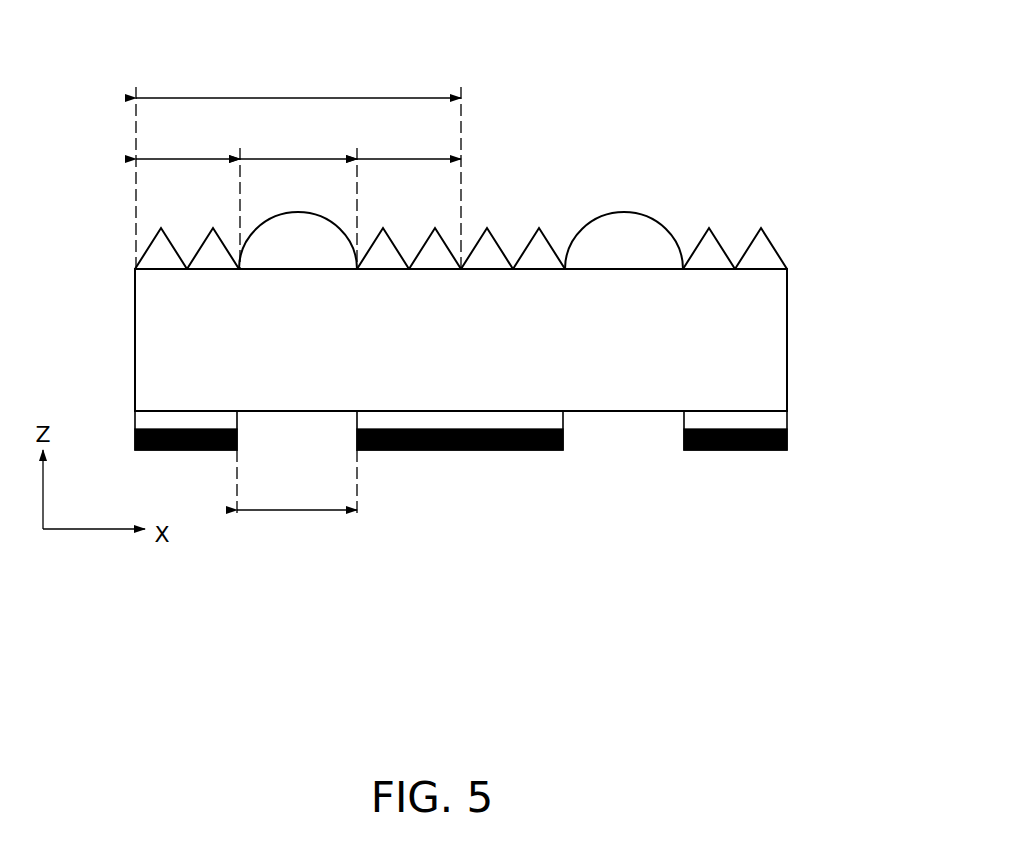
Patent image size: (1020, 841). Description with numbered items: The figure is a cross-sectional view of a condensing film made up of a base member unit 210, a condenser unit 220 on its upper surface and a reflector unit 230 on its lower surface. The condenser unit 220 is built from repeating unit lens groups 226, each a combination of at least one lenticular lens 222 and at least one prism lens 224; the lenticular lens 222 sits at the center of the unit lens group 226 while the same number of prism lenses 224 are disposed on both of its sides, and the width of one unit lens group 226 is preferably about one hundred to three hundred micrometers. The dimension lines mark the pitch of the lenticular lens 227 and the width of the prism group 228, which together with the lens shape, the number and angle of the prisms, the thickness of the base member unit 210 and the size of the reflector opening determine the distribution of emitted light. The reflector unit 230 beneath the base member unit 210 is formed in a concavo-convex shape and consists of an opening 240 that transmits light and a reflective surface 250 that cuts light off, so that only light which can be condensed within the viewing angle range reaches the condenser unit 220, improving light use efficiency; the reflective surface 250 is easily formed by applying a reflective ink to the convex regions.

The base member unit 210 is at (775, 350).
The condenser unit 220 is at (489, 134).
The lenticular lens 222 is at (467, 181).
The prism lens 224 is at (768, 255).
The unit lens group 226 is at (298, 167).
The pitch of the lenticular lens 227 is at (246, 197).
The width of the prism group 228 is at (409, 142).
The reflector unit 230 is at (461, 564).
The opening 240 is at (615, 411).
The reflective surface 250 is at (743, 450).